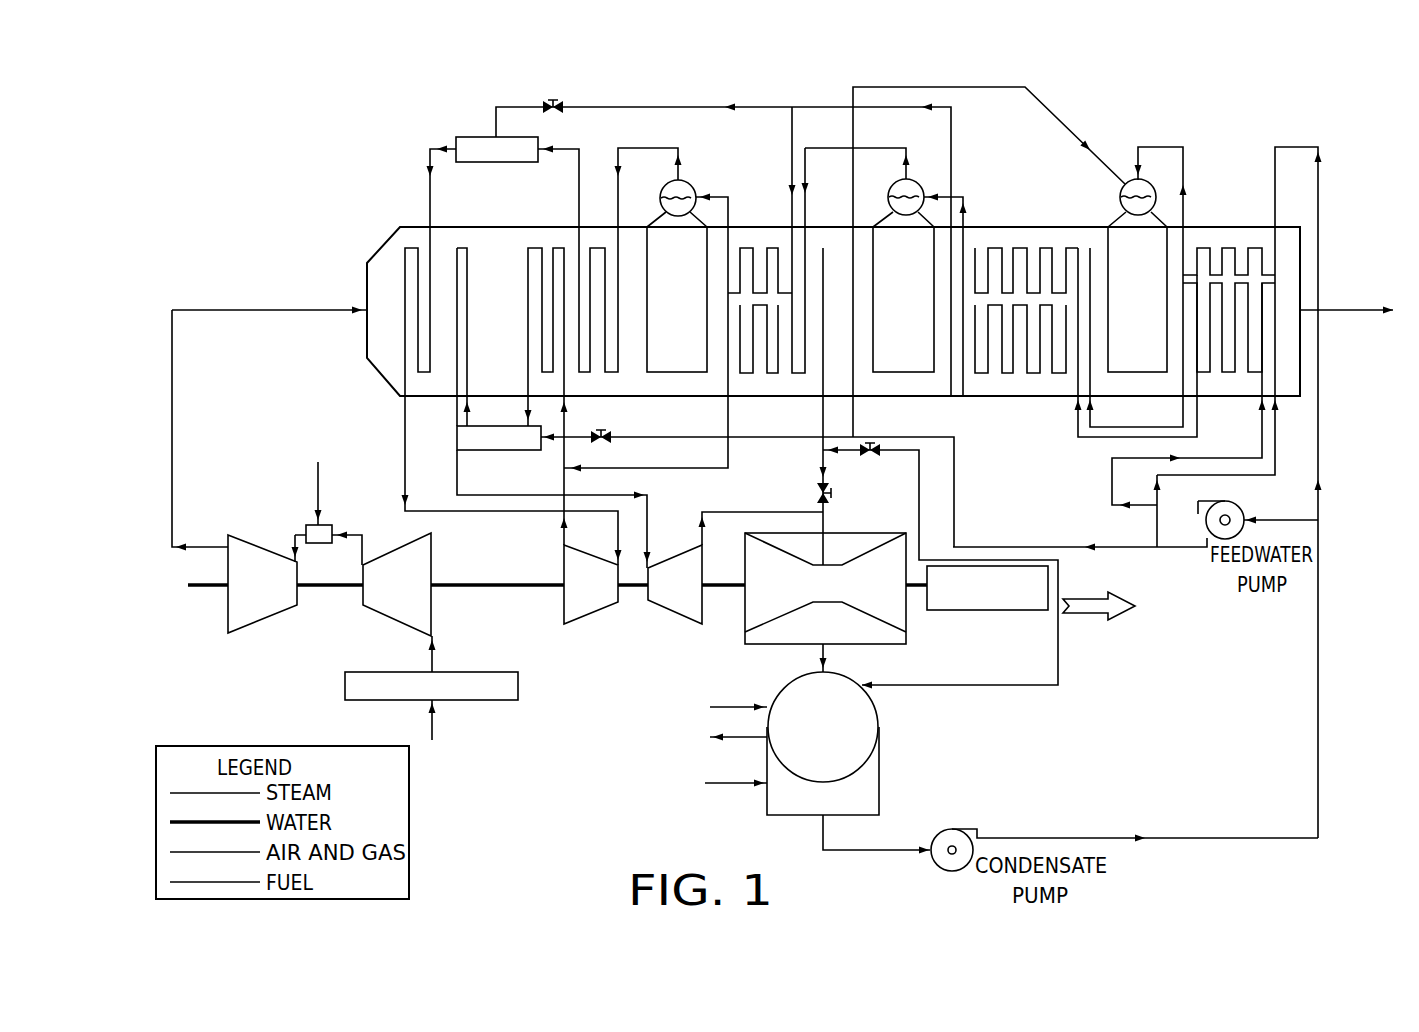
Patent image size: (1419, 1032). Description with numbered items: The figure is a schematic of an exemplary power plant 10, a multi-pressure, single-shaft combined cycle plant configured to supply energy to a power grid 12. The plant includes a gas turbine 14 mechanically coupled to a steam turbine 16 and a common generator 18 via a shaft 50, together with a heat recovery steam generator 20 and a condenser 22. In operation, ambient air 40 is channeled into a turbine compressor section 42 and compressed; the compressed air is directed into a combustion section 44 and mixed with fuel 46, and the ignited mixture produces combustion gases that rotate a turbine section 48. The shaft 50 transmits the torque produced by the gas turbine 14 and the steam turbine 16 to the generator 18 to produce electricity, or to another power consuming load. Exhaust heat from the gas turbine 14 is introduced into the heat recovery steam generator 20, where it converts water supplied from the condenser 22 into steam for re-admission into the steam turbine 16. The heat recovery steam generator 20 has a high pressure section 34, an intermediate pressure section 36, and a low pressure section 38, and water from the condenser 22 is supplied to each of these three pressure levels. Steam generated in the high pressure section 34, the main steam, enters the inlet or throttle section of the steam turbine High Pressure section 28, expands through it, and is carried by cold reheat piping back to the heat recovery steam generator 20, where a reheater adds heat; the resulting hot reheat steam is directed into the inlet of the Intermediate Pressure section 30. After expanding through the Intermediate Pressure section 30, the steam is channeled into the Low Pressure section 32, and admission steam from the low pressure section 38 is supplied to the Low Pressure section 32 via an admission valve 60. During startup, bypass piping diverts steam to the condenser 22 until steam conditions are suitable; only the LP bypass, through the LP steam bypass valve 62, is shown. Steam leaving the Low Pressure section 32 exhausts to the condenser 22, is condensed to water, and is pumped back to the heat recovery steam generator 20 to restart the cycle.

The power plant 10 is at (285, 110).
The power grid 12 is at (1196, 657).
The gas turbine 14 is at (339, 510).
The steam turbine 16 is at (734, 491).
The generator 18 is at (988, 612).
The heat recovery steam generator 20 is at (782, 462).
The condenser 22 is at (878, 727).
The High Pressure section 28 is at (593, 612).
The Intermediate Pressure section 30 is at (680, 552).
The Low Pressure section 32 is at (861, 548).
The high pressure section 34 is at (665, 314).
The intermediate pressure section 36 is at (893, 314).
The low pressure section 38 is at (1125, 314).
The ambient air 40 is at (445, 742).
The turbine compressor section 42 is at (433, 608).
The combustion section 44 is at (306, 525).
The fuel 46 is at (320, 433).
The turbine section 48 is at (257, 620).
The shaft 50 is at (500, 580).
The admission valve 60 is at (817, 490).
The LP steam bypass valve 62 is at (869, 457).